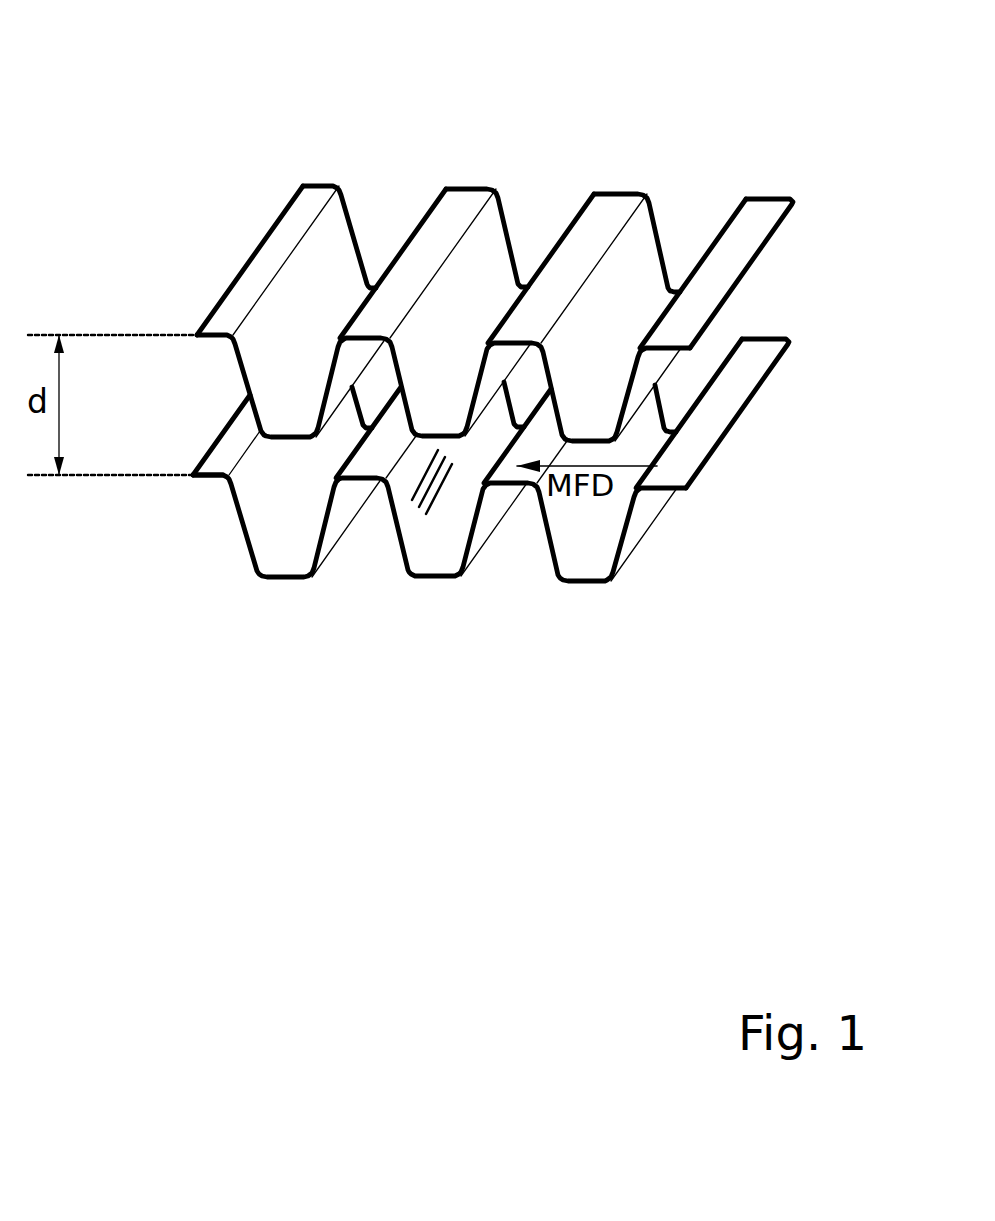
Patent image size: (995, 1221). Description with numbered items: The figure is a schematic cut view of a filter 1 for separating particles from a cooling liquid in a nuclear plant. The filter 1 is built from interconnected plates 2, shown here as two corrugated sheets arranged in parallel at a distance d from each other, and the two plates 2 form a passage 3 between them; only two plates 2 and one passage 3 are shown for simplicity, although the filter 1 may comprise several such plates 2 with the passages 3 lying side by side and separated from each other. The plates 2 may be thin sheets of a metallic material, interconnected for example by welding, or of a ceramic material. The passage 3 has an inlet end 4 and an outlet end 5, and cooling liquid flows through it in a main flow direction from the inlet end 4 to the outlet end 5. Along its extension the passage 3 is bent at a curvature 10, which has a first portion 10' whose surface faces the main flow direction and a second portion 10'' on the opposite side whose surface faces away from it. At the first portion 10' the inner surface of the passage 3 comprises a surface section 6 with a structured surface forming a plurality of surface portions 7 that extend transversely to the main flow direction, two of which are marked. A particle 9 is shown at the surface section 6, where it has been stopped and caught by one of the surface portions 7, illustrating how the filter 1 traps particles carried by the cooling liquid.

The filter 1 is at (277, 130).
The plates 2 is at (768, 345).
The passage 3 is at (302, 489).
The inlet end 4 is at (694, 460).
The outlet end 5 is at (192, 413).
The surface section 6 is at (399, 537).
The surface portions 7 is at (430, 492).
The particle 9 is at (418, 488).
The curvature 10 is at (426, 190).
The first portion of the curvature 10' is at (511, 203).
The second portion of the curvature 10'' is at (367, 283).